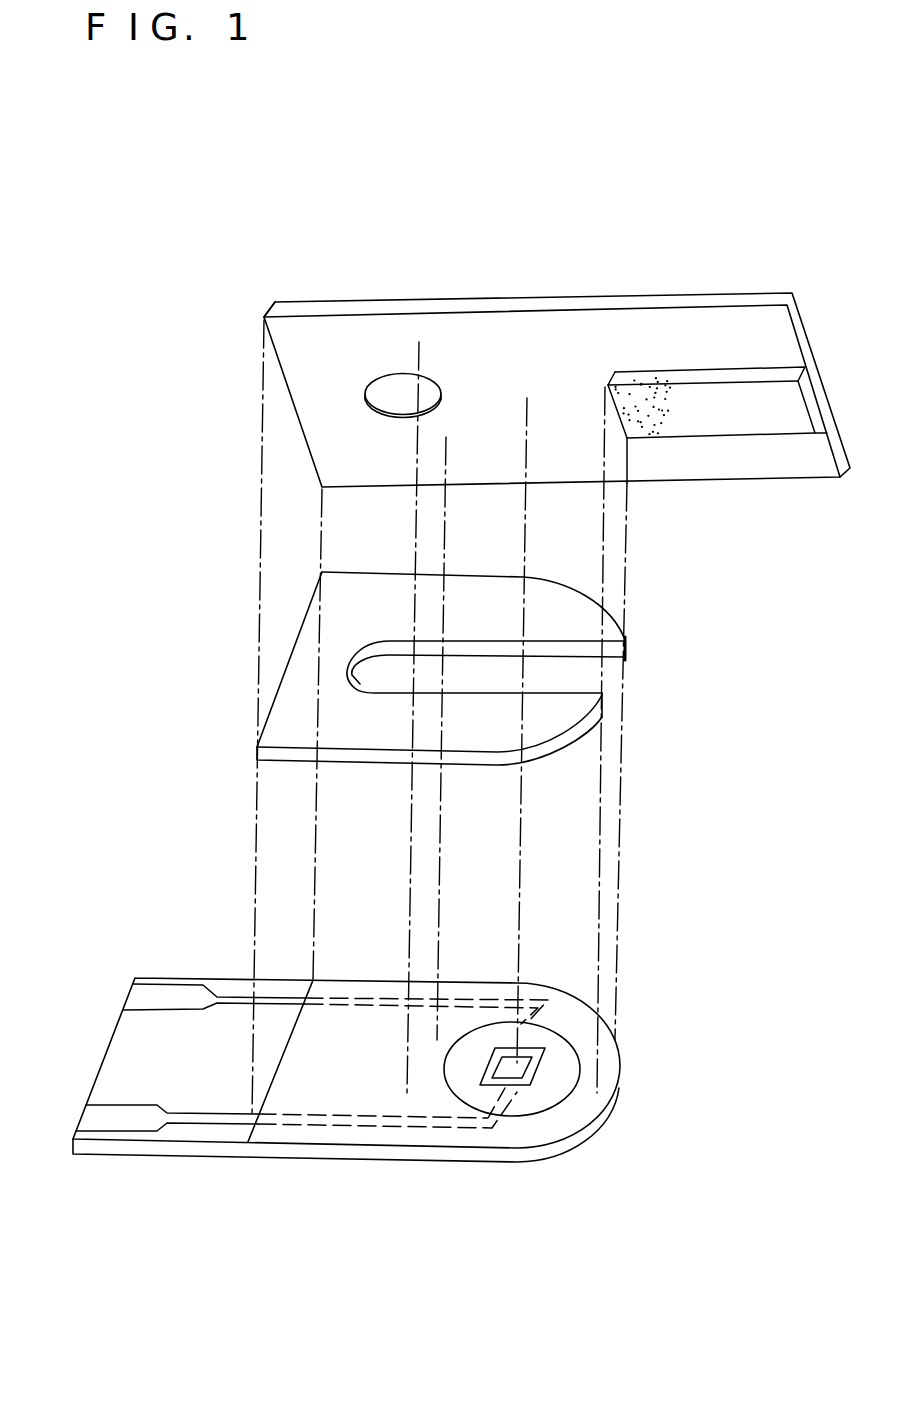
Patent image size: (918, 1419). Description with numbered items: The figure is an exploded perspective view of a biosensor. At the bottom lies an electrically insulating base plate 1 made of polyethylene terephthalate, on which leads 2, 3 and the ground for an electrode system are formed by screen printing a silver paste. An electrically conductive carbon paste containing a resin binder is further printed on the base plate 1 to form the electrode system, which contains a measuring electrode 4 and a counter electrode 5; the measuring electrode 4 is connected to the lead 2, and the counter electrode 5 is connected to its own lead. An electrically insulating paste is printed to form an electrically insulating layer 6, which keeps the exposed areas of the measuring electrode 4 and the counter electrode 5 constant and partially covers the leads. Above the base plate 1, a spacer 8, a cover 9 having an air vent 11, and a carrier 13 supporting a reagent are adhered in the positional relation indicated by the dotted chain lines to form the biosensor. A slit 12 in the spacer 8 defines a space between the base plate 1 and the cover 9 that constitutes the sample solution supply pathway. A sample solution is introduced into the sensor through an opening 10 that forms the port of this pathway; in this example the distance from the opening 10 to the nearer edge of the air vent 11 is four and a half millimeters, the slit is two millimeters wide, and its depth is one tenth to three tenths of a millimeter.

The electrically insulating base plate 1 is at (115, 1052).
The lead 2 is at (95, 1117).
The lead 3 is at (138, 997).
The measuring electrode 4 is at (513, 1070).
The counter electrode 5 is at (560, 1050).
The electrically insulating layer 6 is at (323, 1102).
The spacer 8 is at (300, 687).
The cover 9 is at (302, 358).
The opening 10 is at (608, 675).
The air vent 11 is at (388, 385).
The slit 12 is at (547, 672).
The carrier 13 is at (748, 422).